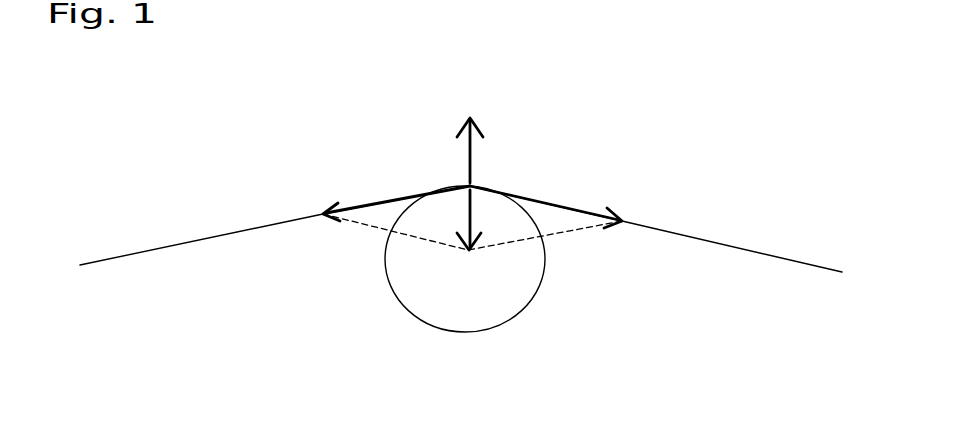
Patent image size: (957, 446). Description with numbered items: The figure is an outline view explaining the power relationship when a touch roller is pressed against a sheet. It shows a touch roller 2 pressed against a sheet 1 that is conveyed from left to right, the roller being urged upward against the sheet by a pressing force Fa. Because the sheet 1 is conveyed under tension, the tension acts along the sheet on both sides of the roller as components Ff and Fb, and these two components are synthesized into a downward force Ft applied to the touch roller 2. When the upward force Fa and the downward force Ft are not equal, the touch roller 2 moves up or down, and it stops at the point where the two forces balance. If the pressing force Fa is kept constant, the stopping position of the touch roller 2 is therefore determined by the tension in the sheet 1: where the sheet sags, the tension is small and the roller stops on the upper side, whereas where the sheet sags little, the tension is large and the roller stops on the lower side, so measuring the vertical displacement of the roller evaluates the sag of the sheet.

The sheet 1 is at (783, 245).
The touch roller 2 is at (518, 293).
The pressing force Fa is at (470, 131).
The synthesized tension force Ft is at (468, 238).
The tension component Fb is at (394, 190).
The tension component Ff is at (546, 201).